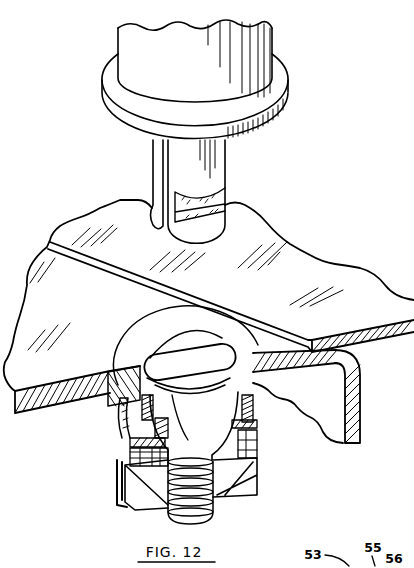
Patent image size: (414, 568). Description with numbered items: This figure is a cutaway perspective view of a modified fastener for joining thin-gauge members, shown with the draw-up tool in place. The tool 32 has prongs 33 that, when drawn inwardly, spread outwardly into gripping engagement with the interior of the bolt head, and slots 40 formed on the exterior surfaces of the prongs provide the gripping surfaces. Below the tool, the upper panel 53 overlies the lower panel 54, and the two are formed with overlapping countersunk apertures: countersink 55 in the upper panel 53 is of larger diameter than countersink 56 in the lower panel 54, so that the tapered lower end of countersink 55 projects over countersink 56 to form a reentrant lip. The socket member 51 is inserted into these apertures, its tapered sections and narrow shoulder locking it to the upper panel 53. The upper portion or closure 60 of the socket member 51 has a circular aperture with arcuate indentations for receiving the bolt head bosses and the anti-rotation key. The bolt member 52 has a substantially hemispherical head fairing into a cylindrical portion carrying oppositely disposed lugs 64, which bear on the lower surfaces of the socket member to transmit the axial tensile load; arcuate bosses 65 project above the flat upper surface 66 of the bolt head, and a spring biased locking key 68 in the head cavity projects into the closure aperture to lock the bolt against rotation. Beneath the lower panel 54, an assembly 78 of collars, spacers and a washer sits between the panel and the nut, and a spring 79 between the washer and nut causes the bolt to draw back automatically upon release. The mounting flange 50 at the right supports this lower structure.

The tool 32 is at (195, 79).
The prongs 33 is at (160, 150).
The slots 40 is at (157, 200).
The upper panel 53 is at (209, 295).
The lower panel 54 is at (93, 407).
The socket member 51 is at (124, 355).
The mounting flange 50 is at (265, 438).
The countersink 55 is at (112, 389).
The countersink 56 is at (107, 408).
The closure 60 is at (156, 337).
The locking key 68 is at (190, 362).
The arcuate bosses 65 is at (186, 345).
The upper surface 66 is at (231, 380).
The lugs 64 is at (145, 395).
The assembly 78 is at (114, 443).
The spring 79 is at (117, 465).
The bolt member 52 is at (191, 451).